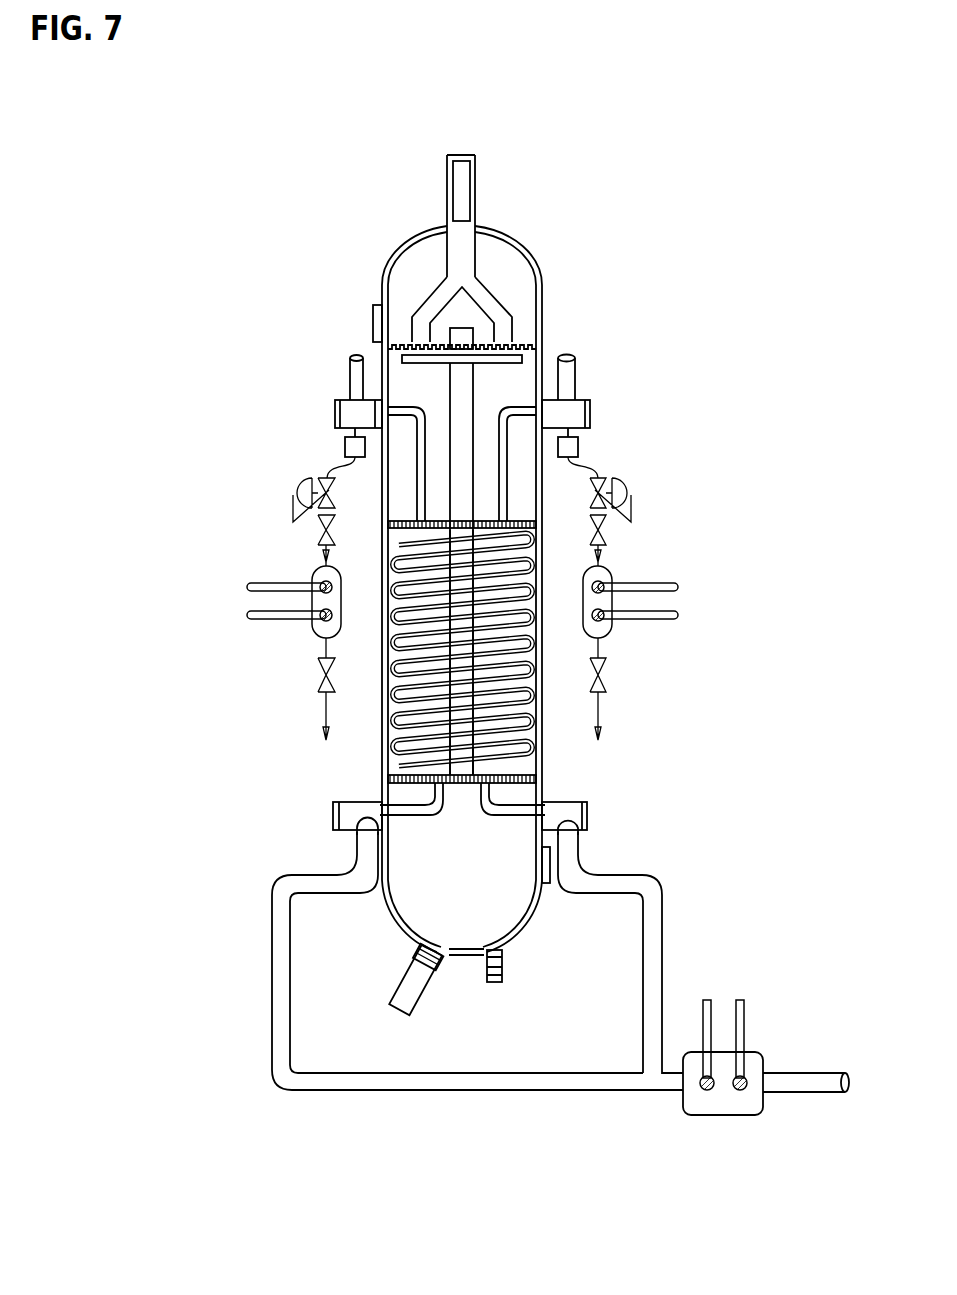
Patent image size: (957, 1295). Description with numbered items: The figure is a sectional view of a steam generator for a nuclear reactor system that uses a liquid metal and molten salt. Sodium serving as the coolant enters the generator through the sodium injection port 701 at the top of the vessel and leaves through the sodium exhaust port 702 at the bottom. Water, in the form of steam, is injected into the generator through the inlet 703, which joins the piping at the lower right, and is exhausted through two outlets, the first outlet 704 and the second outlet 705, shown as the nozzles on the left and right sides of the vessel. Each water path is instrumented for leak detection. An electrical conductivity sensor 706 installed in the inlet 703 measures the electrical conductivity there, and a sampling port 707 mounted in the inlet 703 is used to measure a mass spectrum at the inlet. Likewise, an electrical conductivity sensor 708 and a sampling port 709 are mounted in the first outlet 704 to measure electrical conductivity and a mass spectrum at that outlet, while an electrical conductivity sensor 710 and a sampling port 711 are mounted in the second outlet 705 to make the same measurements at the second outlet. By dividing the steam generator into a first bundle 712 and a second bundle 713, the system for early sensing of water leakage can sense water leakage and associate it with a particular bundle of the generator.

The sodium injection port 701 is at (462, 152).
The sodium exhaust port 702 is at (403, 973).
The inlet 703 is at (828, 1093).
The outlet 1 704 is at (350, 374).
The outlet 2 705 is at (577, 373).
The electrical conductivity sensor 706 is at (707, 1000).
The sampling port 707 is at (740, 1000).
The electrical conductivity sensor 708 is at (245, 587).
The sampling port 709 is at (245, 615).
The electrical conductivity sensor 710 is at (680, 587).
The sampling port 711 is at (680, 615).
The first bundle 712 is at (381, 763).
The second bundle 713 is at (541, 748).